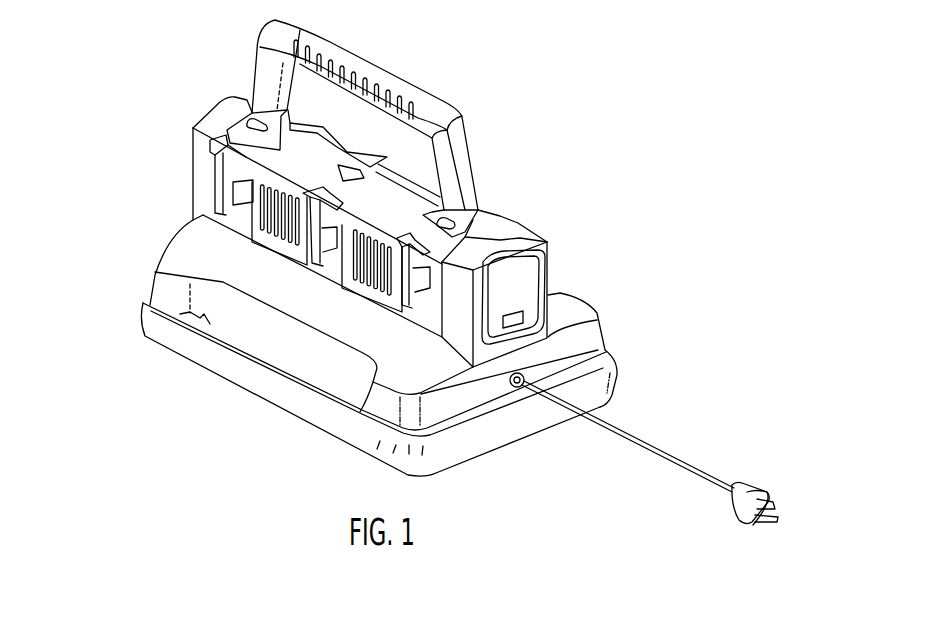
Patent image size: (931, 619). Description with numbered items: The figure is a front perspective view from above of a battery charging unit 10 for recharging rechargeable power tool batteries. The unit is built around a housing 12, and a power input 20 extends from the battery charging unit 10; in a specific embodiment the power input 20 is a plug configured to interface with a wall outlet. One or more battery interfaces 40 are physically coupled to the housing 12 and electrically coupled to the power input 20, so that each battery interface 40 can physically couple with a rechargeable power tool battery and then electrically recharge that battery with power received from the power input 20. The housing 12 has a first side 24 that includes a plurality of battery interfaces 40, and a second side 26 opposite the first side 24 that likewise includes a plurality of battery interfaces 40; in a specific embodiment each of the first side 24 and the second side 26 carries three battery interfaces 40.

The battery charging unit 10 is at (584, 96).
The housing 12 is at (185, 256).
The power input 20 is at (623, 419).
The first side 24 is at (552, 257).
The second side 26 is at (203, 172).
The battery interface 40 is at (406, 303).